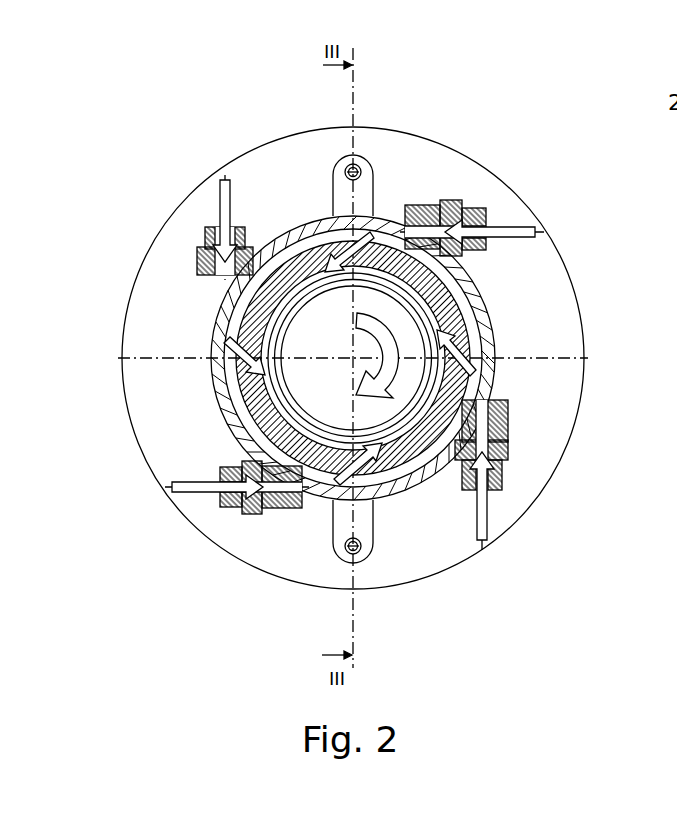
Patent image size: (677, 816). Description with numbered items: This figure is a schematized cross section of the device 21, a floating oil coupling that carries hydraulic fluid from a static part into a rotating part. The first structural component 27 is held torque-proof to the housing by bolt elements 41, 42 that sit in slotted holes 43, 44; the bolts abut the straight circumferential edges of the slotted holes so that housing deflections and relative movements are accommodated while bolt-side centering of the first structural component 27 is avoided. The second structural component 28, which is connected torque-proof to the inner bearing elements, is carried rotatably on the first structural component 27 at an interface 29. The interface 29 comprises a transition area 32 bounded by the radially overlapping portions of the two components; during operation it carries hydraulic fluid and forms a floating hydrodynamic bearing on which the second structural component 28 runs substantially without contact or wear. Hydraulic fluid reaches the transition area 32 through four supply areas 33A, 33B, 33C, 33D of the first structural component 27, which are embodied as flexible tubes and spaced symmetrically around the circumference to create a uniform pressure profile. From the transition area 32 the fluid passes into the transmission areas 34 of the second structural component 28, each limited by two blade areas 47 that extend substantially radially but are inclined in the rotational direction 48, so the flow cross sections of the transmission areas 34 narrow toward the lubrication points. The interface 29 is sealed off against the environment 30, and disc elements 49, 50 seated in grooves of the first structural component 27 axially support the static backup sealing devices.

The device 21 is at (231, 146).
The first structural component 27 is at (425, 205).
The second structural component 28 is at (210, 343).
The interface 29 is at (440, 185).
The environment 30 is at (286, 199).
The transition area 32 is at (458, 200).
The supply area 33A is at (480, 245).
The supply area 33B is at (206, 229).
The supply area 33C is at (221, 498).
The supply area 33D is at (490, 500).
The transmission area 34 is at (171, 486).
The bolt element 41 is at (343, 197).
The bolt element 42 is at (355, 560).
The slotted hole 43 is at (357, 167).
The slotted hole 44 is at (350, 554).
The blade area 47 is at (237, 386).
The rotational direction 48 is at (382, 390).
The disc element 49 is at (346, 166).
The disc element 50 is at (333, 540).